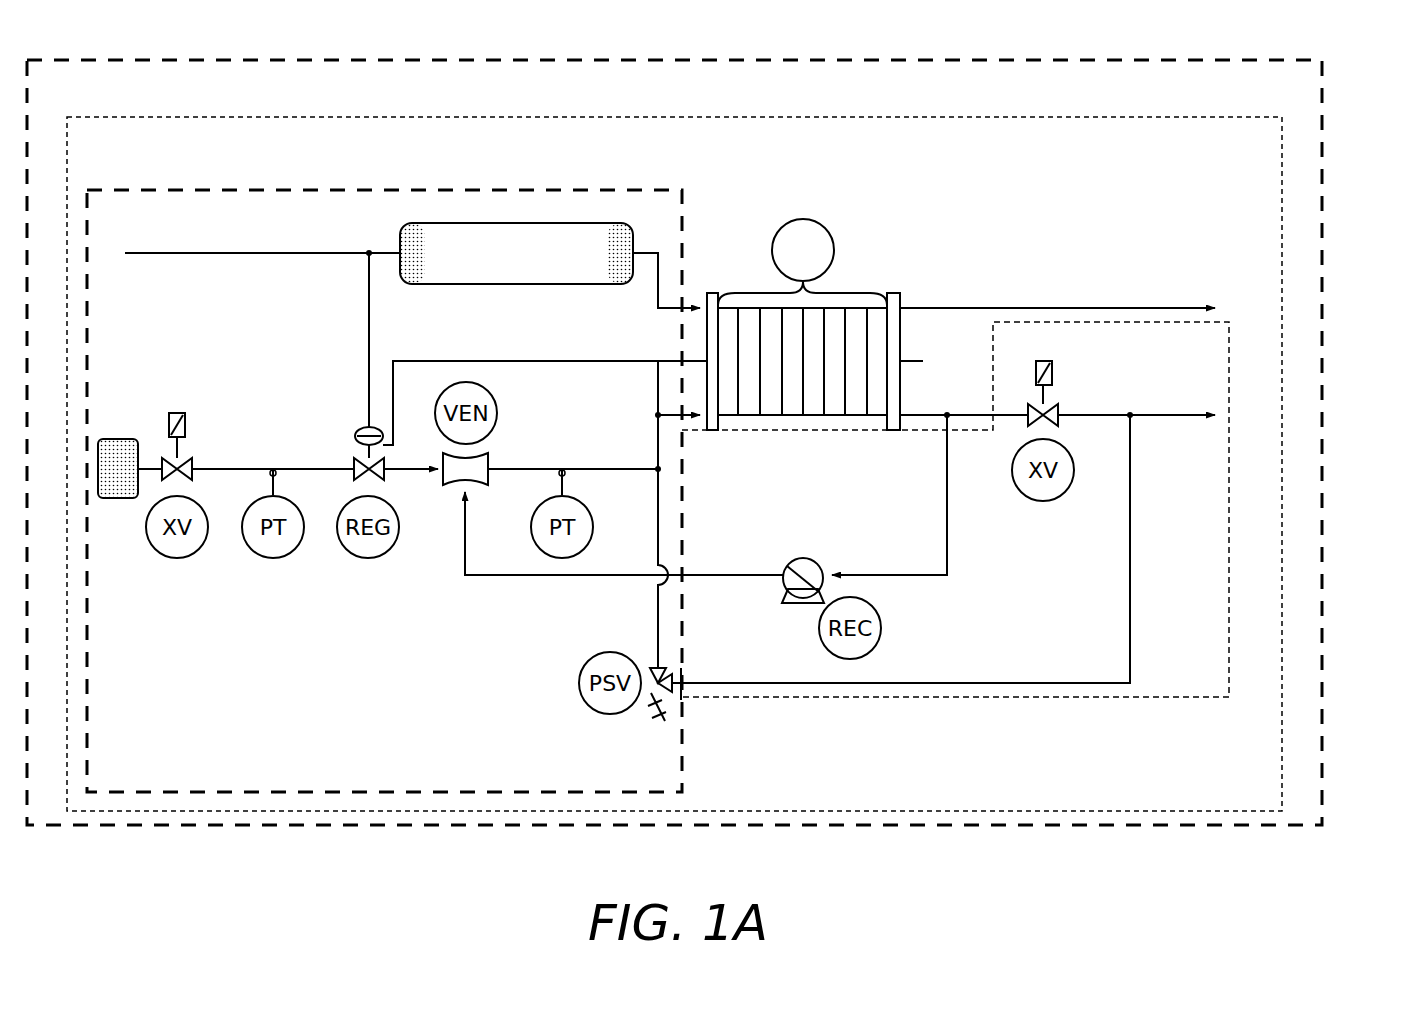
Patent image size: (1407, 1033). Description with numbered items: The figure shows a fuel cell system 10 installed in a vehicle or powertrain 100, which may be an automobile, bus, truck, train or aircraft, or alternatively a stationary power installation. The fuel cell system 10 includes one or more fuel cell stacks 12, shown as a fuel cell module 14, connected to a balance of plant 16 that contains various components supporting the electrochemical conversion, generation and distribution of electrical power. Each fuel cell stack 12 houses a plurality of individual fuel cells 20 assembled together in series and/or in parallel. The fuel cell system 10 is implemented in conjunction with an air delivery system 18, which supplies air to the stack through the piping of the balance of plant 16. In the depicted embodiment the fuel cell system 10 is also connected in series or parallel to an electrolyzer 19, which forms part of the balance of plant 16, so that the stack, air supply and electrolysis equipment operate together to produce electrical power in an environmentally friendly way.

The vehicle 100 is at (1338, 168).
The fuel cell system 10 is at (1287, 258).
The fuel cell stack 12 is at (803, 279).
The fuel cell module 14 is at (716, 282).
The balance of plant 16 is at (428, 188).
The air delivery system 18 is at (522, 292).
The electrolyzer 19 is at (120, 436).
The fuel cell 20 is at (878, 305).